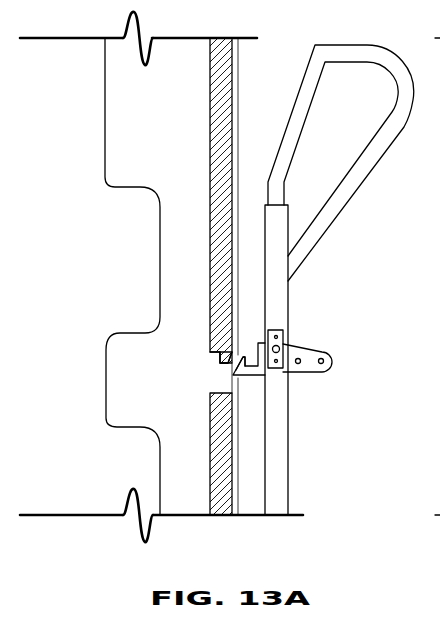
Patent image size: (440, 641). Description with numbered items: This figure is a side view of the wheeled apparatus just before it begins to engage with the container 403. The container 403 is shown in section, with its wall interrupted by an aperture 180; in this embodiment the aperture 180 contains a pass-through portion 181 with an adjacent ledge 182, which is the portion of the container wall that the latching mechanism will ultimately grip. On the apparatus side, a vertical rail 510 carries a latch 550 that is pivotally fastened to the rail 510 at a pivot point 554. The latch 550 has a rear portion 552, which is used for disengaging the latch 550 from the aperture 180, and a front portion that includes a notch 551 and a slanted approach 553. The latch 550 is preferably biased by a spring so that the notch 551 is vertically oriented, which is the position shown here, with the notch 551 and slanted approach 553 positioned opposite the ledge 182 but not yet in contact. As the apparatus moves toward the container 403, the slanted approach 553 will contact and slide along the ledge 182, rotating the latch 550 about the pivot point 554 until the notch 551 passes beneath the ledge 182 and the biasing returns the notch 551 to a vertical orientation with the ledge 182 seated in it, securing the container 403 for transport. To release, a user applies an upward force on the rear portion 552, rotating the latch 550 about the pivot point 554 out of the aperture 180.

The container 403 is at (150, 140).
The slanted approach 553 is at (240, 356).
The ledge 182 is at (220, 362).
The aperture 180 is at (207, 375).
The pass-through portion 181 is at (220, 382).
The notch 551 is at (252, 352).
The latch 550 is at (297, 333).
The pivot point 554 is at (281, 349).
The rear portion 552 is at (312, 372).
The vertical rail 510 is at (287, 443).